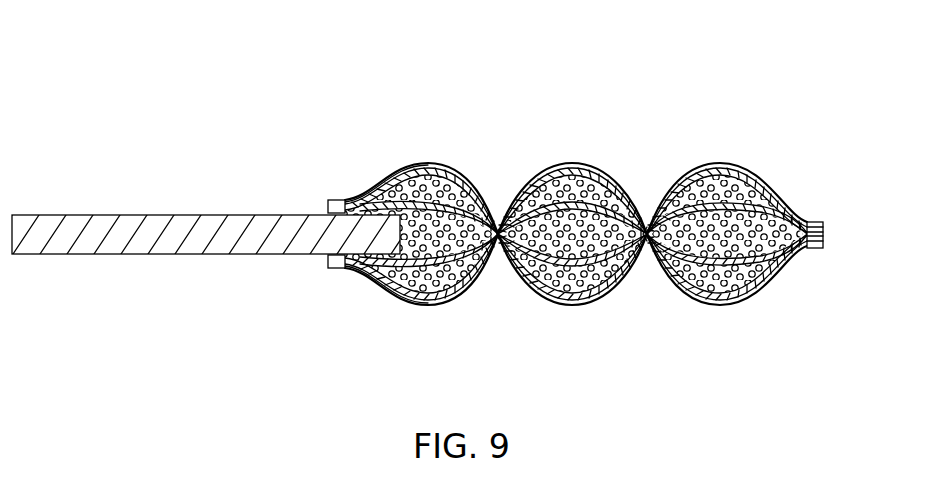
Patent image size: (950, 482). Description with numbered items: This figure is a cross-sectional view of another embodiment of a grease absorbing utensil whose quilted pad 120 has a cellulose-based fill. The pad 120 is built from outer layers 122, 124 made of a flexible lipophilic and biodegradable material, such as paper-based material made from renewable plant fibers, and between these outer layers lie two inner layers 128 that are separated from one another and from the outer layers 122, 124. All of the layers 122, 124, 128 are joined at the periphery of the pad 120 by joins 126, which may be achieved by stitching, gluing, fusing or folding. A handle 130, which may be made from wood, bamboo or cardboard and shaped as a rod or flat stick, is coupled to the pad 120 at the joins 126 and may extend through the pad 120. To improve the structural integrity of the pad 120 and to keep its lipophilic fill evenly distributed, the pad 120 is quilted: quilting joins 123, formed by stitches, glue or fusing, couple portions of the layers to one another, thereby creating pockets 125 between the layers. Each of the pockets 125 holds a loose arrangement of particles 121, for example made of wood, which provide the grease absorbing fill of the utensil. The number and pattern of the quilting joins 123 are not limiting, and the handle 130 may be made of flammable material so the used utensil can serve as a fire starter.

The pad 120 is at (826, 162).
The particles 121 is at (397, 173).
The outer layer 122 is at (428, 165).
The quilting joins 123 is at (508, 172).
The outer layer 124 is at (418, 305).
The pockets 125 is at (455, 166).
The joins 126 is at (330, 201).
The inner layers 128 is at (422, 172).
The handle 130 is at (134, 242).